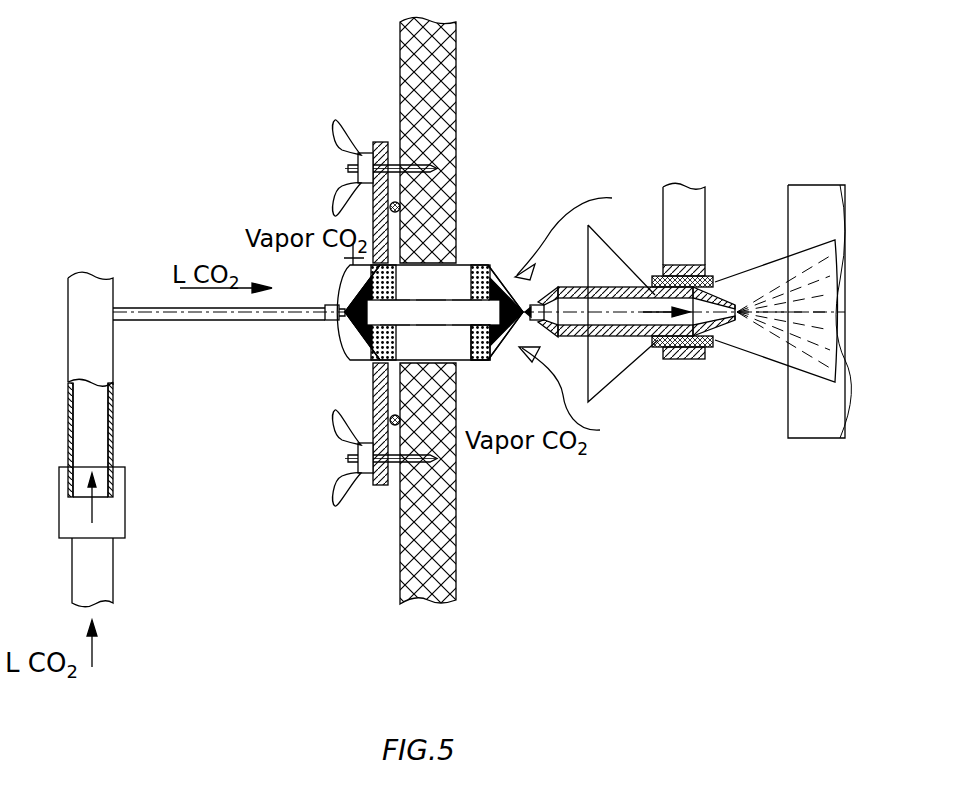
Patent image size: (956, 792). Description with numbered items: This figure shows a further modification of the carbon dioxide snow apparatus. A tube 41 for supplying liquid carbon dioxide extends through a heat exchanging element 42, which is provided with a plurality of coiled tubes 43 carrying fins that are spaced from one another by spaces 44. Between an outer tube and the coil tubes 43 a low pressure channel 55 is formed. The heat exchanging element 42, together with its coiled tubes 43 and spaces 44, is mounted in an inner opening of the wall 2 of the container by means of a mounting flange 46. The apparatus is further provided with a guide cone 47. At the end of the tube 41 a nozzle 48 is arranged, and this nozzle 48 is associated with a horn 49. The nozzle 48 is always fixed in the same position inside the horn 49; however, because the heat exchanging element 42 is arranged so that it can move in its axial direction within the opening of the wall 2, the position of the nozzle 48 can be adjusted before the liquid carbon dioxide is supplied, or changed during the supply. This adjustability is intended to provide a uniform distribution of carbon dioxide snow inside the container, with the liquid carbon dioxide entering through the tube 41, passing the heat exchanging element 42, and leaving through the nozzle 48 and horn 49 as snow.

The wall 2 is at (425, 505).
The tube 41 is at (113, 459).
The heat exchanging element 42 is at (452, 285).
The coiled tubes 43 is at (498, 358).
The spaces 44 is at (350, 370).
The mounting flange 46 is at (377, 142).
The guide cone 47 is at (598, 377).
The nozzle 48 is at (735, 306).
The horn 49 is at (760, 358).
The low pressure channel 55 is at (352, 343).